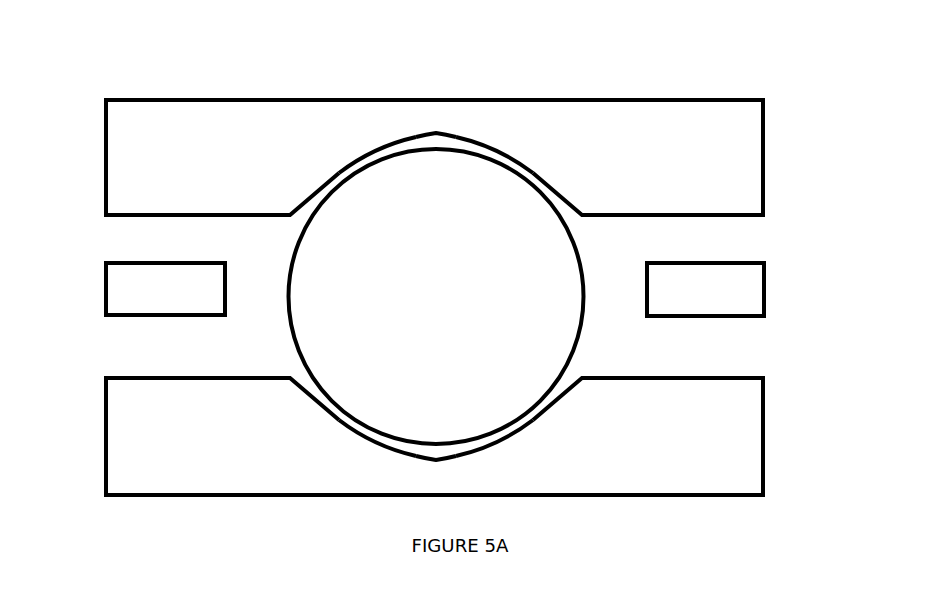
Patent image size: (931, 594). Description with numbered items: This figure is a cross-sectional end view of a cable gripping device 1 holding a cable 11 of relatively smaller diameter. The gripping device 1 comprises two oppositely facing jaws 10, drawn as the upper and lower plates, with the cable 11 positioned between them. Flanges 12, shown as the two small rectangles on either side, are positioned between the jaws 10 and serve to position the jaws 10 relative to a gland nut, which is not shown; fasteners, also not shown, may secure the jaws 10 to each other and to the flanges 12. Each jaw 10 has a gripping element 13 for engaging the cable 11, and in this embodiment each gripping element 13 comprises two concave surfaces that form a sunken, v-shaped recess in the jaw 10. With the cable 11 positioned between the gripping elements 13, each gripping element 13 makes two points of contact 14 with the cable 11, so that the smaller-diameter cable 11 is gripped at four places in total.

The gripping device 1 is at (159, 63).
The jaw 10 is at (700, 120).
The cable 11 is at (530, 237).
The flange 12 is at (127, 280).
The gripping element 13 is at (447, 140).
The point of contact 14 is at (370, 157).